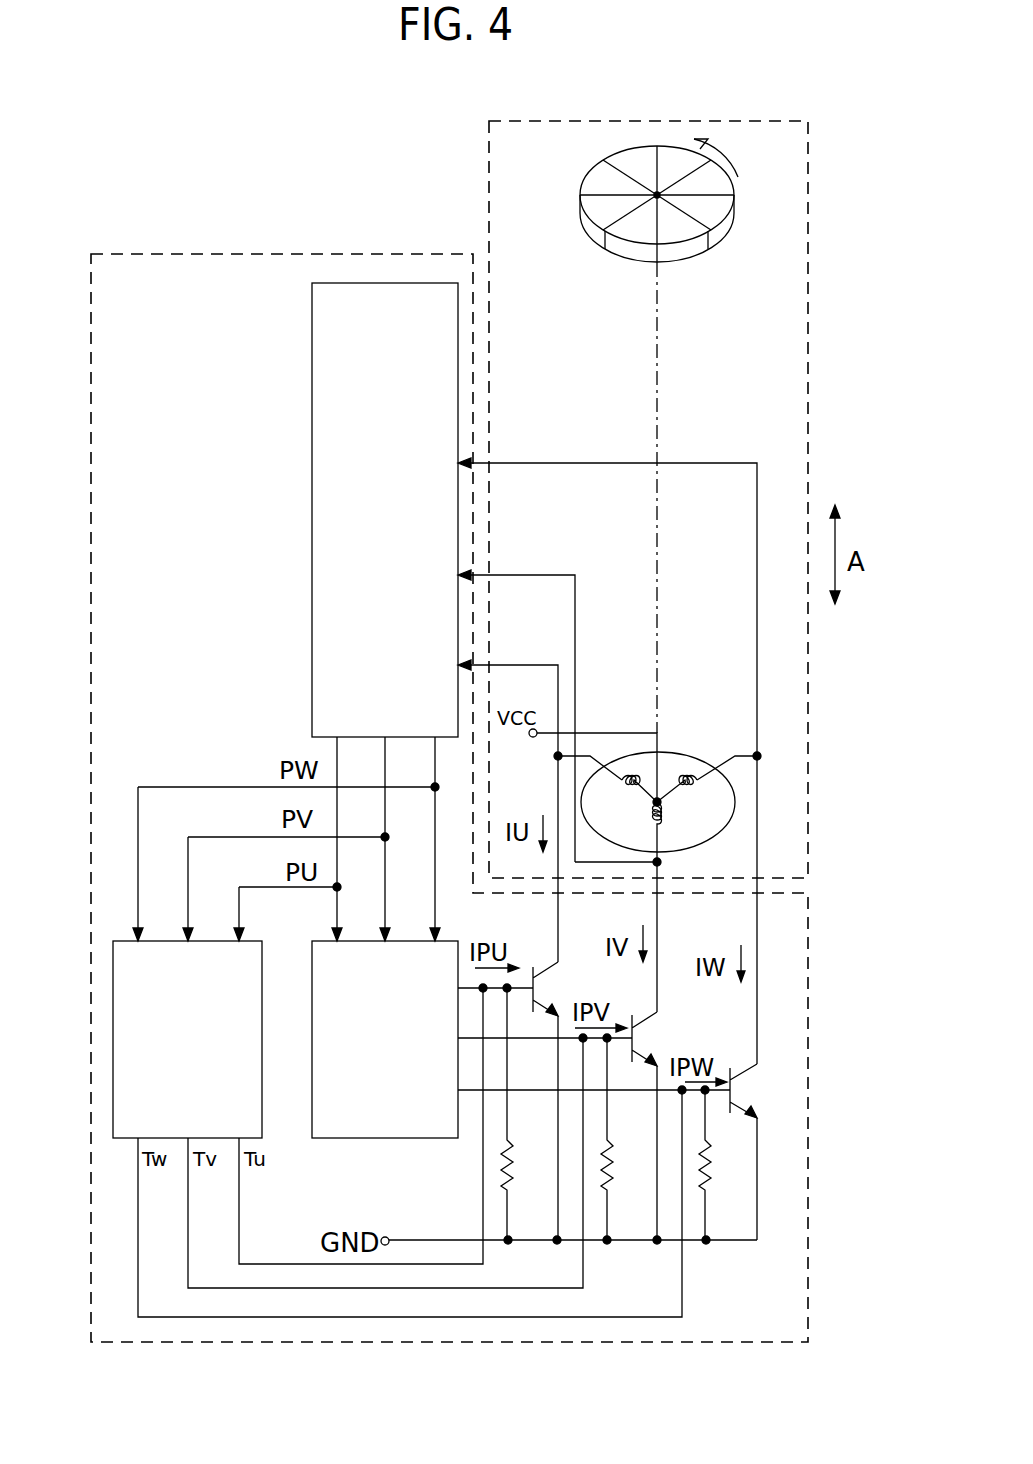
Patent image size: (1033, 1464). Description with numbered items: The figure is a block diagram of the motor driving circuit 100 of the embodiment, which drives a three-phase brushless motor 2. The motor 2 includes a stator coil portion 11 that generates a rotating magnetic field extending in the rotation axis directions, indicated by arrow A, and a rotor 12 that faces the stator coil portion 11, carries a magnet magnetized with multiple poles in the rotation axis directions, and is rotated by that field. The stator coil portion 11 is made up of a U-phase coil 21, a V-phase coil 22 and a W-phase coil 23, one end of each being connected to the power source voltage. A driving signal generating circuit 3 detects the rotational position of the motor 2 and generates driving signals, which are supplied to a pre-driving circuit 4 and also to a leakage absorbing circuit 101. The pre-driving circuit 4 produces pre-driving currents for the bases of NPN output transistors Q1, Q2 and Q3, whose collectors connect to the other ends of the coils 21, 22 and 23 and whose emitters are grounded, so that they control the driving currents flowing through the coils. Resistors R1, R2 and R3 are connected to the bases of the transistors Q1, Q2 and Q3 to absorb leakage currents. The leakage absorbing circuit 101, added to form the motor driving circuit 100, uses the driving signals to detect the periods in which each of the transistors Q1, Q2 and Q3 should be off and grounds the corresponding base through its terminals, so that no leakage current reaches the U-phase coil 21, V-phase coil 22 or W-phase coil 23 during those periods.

The motor driving circuit 100 is at (262, 254).
The three-phase brushless motor 2 is at (808, 312).
The rotor 12 is at (735, 212).
The stator coil portion 11 is at (705, 786).
The U-phase coil 21 is at (624, 790).
The V-phase coil 22 is at (669, 814).
The W-phase coil 23 is at (684, 778).
The driving signal generating circuit 3 is at (312, 618).
The pre-driving circuit 4 is at (375, 1138).
The leakage absorbing circuit 101 is at (112, 941).
The output transistor Q1 is at (557, 1101).
The output transistor Q2 is at (657, 1051).
The output transistor Q3 is at (756, 1152).
The resistor R1 is at (528, 1114).
The resistor R2 is at (626, 1139).
The resistor R3 is at (722, 1165).